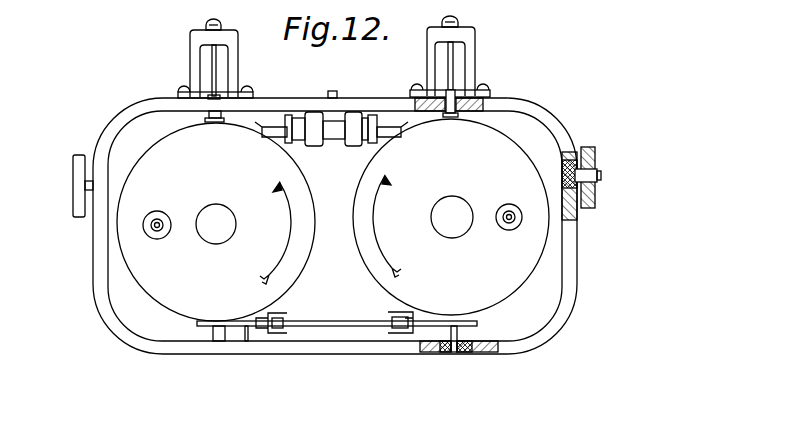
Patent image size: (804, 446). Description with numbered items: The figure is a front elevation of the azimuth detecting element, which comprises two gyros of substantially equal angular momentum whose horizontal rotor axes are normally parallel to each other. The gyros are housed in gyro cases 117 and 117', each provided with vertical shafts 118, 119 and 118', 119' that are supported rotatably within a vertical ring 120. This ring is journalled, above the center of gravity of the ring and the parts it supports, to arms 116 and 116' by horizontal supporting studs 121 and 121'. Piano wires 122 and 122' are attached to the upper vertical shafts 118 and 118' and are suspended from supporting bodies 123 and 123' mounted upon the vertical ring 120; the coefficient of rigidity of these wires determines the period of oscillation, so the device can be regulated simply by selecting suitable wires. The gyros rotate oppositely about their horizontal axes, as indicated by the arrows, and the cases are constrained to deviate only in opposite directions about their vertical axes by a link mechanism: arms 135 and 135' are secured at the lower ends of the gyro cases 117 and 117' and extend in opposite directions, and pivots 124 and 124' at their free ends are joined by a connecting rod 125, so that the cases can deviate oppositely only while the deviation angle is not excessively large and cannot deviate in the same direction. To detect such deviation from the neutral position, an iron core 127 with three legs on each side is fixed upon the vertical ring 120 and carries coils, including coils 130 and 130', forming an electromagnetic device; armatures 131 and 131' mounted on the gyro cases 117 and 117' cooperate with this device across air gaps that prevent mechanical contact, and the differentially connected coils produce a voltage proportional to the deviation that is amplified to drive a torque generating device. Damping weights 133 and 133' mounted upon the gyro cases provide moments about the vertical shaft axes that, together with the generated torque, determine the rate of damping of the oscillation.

The arm 116 is at (63, 186).
The arm 116' is at (606, 176).
The gyro case 117 is at (216, 225).
The gyro case 117' is at (451, 219).
The vertical shaft 118 is at (187, 122).
The vertical shaft 118' is at (479, 89).
The vertical shaft 119 is at (201, 354).
The vertical shaft 119' is at (459, 355).
The vertical ring 120 is at (386, 100).
The horizontal supporting stud 121 is at (75, 214).
The horizontal supporting stud 121' is at (609, 180).
The piano wire 122 is at (241, 72).
The piano wire 122' is at (479, 63).
The supporting body 123 is at (203, 58).
The supporting body 123' is at (440, 56).
The pivot 124 is at (290, 314).
The pivot 124' is at (390, 346).
The connecting rod 125 is at (343, 328).
The iron core 127 is at (335, 137).
The coil 130 is at (304, 111).
The coil 130' is at (360, 109).
The armature 131 is at (269, 146).
The armature 131' is at (404, 140).
The damping weight 133 is at (158, 238).
The damping weight 133' is at (512, 205).
The arm 135 is at (248, 353).
The arm 135' is at (446, 316).